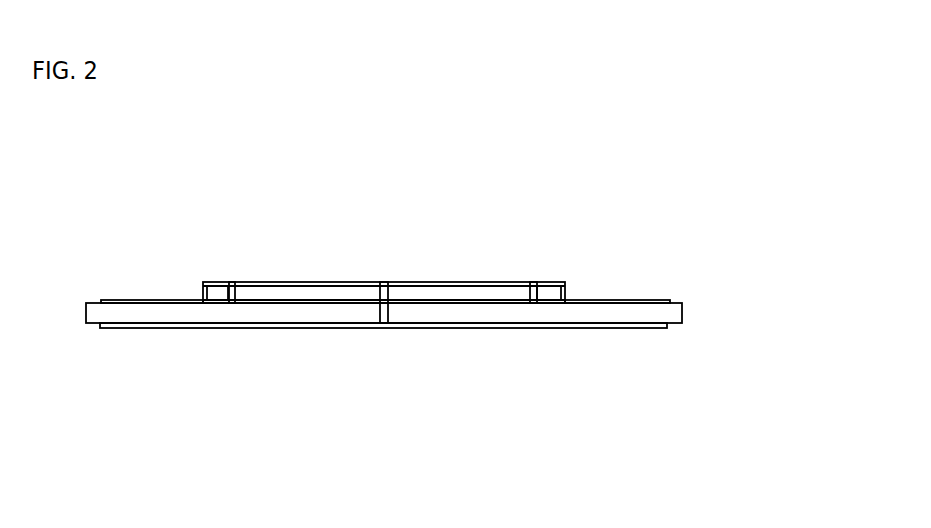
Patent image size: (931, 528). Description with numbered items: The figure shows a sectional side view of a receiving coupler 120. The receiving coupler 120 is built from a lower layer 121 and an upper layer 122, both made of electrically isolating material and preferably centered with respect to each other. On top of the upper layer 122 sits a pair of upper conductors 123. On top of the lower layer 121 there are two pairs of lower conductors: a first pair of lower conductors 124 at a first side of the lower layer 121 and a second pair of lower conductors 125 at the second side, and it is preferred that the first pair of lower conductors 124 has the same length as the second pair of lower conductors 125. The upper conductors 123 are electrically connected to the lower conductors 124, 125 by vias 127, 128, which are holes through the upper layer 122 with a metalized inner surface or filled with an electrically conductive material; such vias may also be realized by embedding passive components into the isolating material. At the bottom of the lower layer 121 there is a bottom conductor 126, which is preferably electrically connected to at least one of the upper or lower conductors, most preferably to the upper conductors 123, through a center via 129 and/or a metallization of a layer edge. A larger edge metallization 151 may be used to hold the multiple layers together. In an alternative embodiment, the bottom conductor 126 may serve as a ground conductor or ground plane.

The receiving coupler 120 is at (387, 277).
The lower layer 121 is at (672, 312).
The upper layer 122 is at (550, 292).
The upper conductors 123 is at (330, 281).
The first pair of lower conductors 124 is at (122, 300).
The second pair of lower conductors 125 is at (652, 300).
The bottom conductor 126 is at (287, 329).
The via 127 is at (232, 290).
The via 128 is at (533, 290).
The center via 129 is at (382, 324).
The edge metallization 151 is at (200, 293).